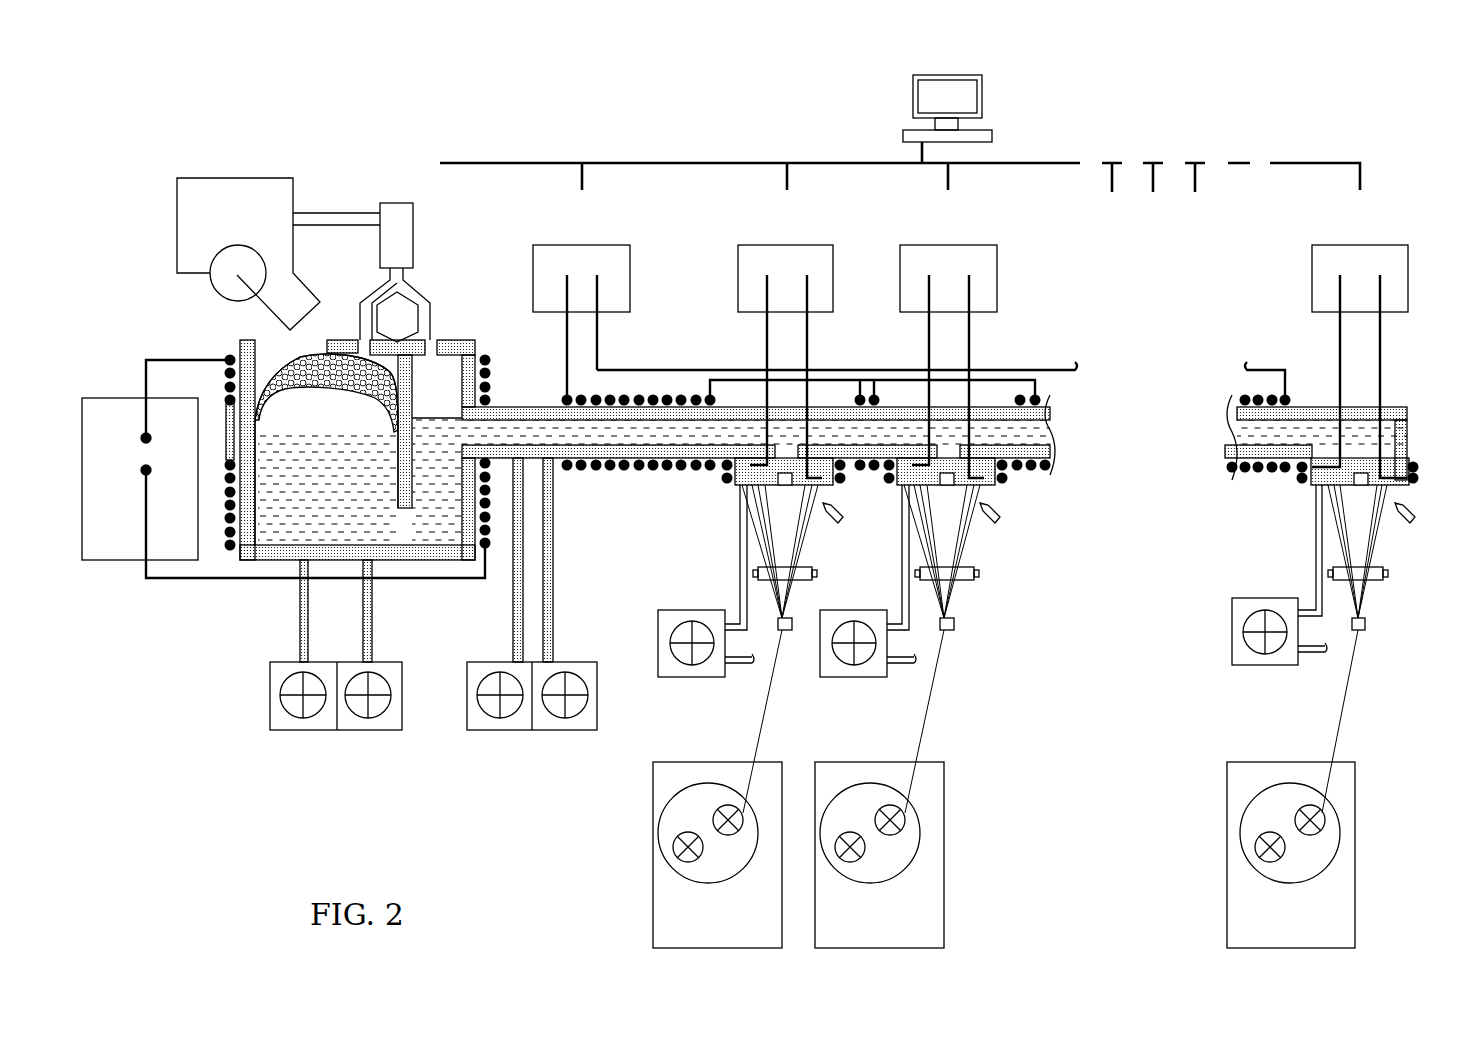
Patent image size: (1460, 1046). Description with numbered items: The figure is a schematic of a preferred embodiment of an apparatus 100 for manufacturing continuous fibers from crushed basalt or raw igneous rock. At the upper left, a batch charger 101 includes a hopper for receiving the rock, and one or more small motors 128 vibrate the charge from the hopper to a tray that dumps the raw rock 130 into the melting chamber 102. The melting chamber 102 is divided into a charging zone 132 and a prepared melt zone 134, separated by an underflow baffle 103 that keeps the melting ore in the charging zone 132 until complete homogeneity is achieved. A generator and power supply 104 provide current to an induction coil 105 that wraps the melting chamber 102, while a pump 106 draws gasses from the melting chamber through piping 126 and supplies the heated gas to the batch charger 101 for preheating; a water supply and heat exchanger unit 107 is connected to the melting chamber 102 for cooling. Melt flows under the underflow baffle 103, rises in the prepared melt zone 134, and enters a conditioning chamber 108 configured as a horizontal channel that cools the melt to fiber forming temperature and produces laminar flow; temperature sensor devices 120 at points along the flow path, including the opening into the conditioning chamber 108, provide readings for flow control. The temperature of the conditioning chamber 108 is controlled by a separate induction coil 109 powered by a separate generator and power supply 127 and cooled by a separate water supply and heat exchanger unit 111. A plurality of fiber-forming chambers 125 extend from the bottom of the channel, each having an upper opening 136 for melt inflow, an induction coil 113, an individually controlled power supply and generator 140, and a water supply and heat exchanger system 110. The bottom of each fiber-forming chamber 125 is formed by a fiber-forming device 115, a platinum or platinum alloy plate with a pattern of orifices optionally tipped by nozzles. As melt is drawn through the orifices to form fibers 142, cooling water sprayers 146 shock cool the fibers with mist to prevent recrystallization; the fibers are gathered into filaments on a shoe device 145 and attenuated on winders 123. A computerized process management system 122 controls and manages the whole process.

The apparatus 100 is at (700, 113).
The batch charger 101 is at (215, 178).
The melting chamber 102 is at (246, 556).
The underflow baffle 103 is at (405, 510).
The generator and power supply 104 is at (118, 560).
The induction coil 105 is at (228, 358).
The pump 106 is at (394, 203).
The water supply and heat exchanger unit 107 is at (296, 731).
The conditioning chamber 108 is at (522, 408).
The induction coil 109 is at (618, 471).
The water supply and heat exchanger system 110 is at (678, 678).
The water supply and heat exchanger unit 111 is at (491, 731).
The induction coil 113 is at (722, 472).
The fiber-forming device 115 is at (812, 545).
The temperature sensor devices 120 is at (535, 422).
The computerized process management system 122 is at (986, 98).
The winders 123 is at (653, 905).
The fiber-forming chambers 125 is at (745, 488).
The piping 126 is at (426, 300).
The generator and power supply 127 is at (552, 245).
The small motors 128 is at (211, 288).
The raw rock 130 is at (318, 355).
The charging zone 132 is at (286, 556).
The prepared melt zone 134 is at (451, 556).
The upper opening 136 is at (766, 440).
The power supply and generator 140 is at (826, 245).
The fibers 142 is at (758, 573).
The shoe device 145 is at (953, 624).
The cooling water sprayers 146 is at (831, 526).